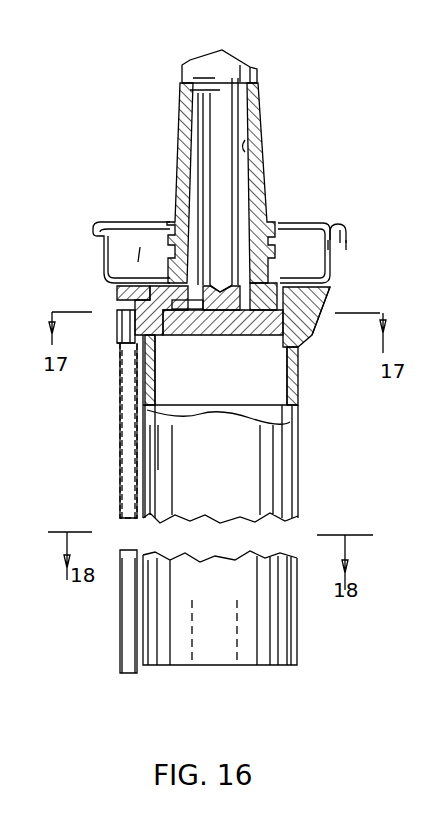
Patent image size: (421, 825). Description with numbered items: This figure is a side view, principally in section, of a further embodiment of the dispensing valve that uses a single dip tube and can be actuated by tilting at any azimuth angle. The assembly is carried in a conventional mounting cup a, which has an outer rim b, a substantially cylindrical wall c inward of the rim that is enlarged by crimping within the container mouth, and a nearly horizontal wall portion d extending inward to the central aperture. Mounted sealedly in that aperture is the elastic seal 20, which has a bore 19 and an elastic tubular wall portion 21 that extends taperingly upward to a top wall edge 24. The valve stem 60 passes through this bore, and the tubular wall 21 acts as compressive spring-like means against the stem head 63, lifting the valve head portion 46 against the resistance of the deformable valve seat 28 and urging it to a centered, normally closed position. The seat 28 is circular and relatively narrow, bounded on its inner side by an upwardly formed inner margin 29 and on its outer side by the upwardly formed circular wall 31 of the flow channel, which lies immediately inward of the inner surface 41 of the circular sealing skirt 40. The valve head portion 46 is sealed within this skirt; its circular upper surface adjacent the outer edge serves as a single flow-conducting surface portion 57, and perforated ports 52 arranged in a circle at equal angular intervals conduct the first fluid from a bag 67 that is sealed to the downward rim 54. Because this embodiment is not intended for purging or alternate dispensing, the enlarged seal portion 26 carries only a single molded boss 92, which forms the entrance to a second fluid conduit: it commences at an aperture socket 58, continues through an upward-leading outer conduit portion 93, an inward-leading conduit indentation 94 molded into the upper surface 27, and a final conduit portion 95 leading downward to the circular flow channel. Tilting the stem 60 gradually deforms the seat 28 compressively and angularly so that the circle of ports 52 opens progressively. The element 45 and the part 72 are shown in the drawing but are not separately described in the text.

The stem head 63 is at (228, 57).
The top wall edge 24 is at (262, 81).
The tubular wall portion 21 is at (181, 120).
The valve stem 60 is at (233, 121).
The bore 19 is at (247, 147).
The elastic seal 20 is at (278, 173).
The conduit indentation 94 is at (132, 283).
The final conduit portion 95 is at (145, 290).
The outer conduit portion 93 is at (128, 300).
The aperture socket 58 is at (140, 318).
The circular wall 31 is at (133, 322).
The molded boss 92 is at (120, 333).
The inner surface 41 is at (130, 345).
The valve seat 45 is at (223, 252).
The upper surface 27 is at (281, 300).
The valve seat 28 is at (275, 302).
The enlarged seal portion 26 is at (332, 289).
The flow-conducting surface portion 57 is at (317, 297).
The inner margin 29 is at (225, 279).
The sealing skirt 40 is at (300, 336).
The valve head portion 46 is at (232, 336).
The perforated ports 52 is at (158, 338).
The downward rim 54 is at (287, 384).
The bag 67 is at (276, 455).
The outer sleeve 72 is at (122, 602).
The mounting cup a is at (339, 243).
The outer rim b is at (347, 229).
The cylindrical wall c is at (327, 245).
The horizontal wall portion d is at (134, 243).